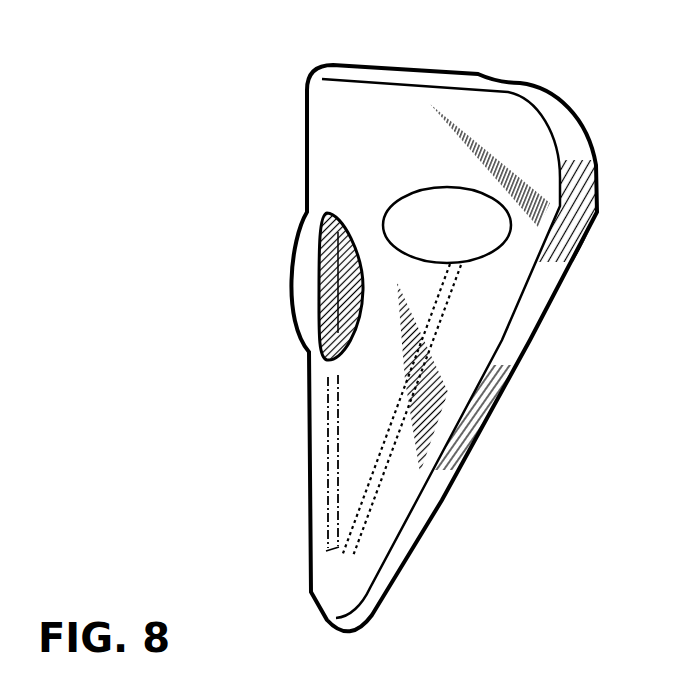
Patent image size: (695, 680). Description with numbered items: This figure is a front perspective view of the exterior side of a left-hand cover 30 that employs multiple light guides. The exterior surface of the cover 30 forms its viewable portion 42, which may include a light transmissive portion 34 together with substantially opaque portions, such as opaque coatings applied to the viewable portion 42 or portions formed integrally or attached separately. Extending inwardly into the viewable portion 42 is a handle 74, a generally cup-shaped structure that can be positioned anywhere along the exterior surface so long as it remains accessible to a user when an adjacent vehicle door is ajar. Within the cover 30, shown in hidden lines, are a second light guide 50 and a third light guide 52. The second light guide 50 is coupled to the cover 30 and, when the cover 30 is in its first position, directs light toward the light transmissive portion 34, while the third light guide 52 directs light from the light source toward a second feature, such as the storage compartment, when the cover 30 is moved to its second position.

The cover 30 is at (540, 147).
The viewable portion 42 is at (507, 96).
The light transmissive portion 34 is at (490, 225).
The handle 74 is at (333, 277).
The third light guide 52 is at (332, 455).
The second light guide 50 is at (382, 466).